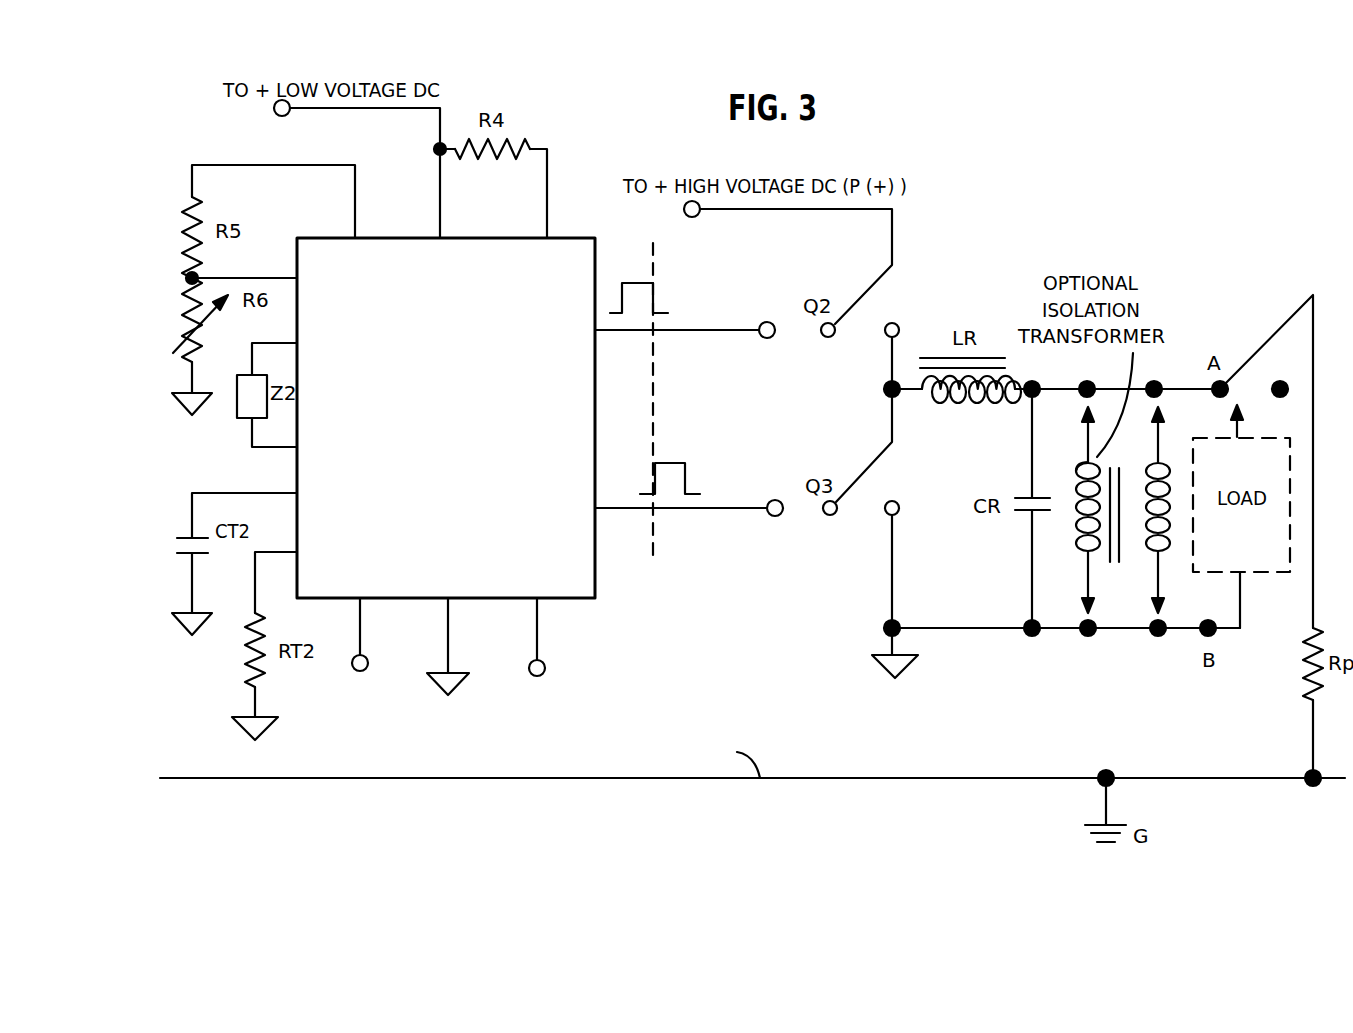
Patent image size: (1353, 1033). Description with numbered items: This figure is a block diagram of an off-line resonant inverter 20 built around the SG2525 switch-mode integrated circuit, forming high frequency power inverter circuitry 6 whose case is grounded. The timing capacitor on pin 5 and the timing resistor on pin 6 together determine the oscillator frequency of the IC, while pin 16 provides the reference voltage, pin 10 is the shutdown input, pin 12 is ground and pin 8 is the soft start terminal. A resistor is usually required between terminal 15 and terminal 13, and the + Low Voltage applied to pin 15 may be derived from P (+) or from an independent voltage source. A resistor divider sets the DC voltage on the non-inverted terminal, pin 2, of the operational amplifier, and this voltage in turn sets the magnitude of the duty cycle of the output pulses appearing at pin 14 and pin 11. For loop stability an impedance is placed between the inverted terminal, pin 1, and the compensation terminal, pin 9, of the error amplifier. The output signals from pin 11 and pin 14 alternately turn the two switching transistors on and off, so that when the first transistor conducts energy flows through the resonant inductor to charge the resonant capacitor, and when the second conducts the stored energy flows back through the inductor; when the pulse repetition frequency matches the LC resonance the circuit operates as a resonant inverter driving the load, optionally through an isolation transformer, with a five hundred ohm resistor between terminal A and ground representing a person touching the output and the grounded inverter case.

The off-line resonant inverter 20 is at (603, 235).
The high frequency power inverter circuitry 6 is at (730, 787).
The Vref pin 16 is at (277, 201).
The terminal 15 (+Vin pin) 15 is at (363, 169).
The terminal 13 (Vcc pin) 13 is at (497, 193).
The non-inverted terminal (pin 2) 2 is at (244, 263).
The inverted terminal (pin 1) 1 is at (276, 343).
The compensation terminal (pin 9) 9 is at (275, 429).
The timing capacitor pin 5 is at (245, 501).
The shutdown pin 10 is at (347, 634).
The ground pin 12 is at (454, 646).
The soft start pin 8 is at (534, 637).
The output pulse terminal (pin 14) 14 is at (685, 322).
The output pulse terminal (pin 11) 11 is at (689, 500).